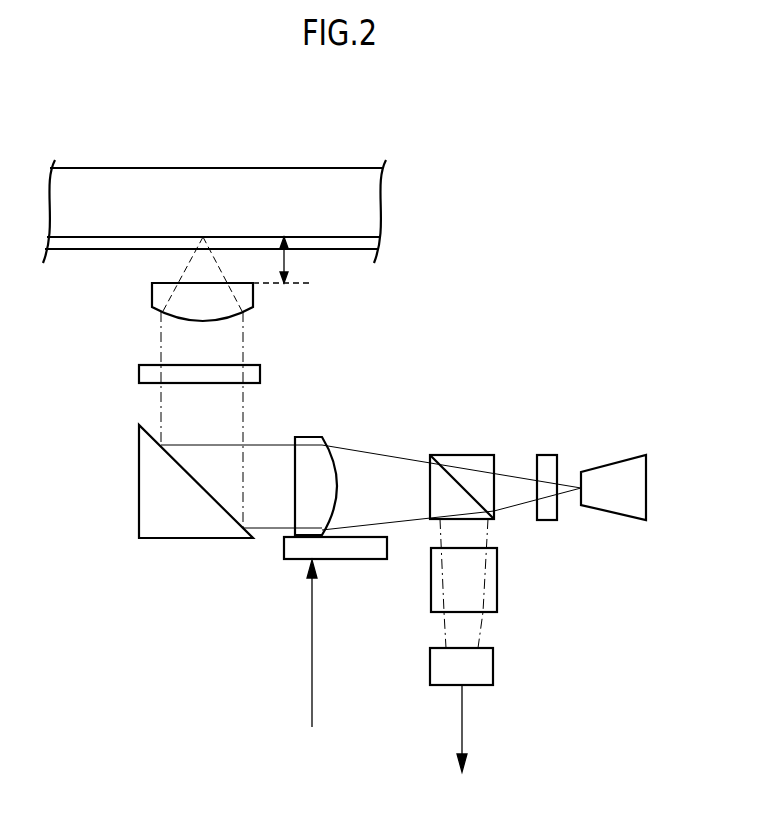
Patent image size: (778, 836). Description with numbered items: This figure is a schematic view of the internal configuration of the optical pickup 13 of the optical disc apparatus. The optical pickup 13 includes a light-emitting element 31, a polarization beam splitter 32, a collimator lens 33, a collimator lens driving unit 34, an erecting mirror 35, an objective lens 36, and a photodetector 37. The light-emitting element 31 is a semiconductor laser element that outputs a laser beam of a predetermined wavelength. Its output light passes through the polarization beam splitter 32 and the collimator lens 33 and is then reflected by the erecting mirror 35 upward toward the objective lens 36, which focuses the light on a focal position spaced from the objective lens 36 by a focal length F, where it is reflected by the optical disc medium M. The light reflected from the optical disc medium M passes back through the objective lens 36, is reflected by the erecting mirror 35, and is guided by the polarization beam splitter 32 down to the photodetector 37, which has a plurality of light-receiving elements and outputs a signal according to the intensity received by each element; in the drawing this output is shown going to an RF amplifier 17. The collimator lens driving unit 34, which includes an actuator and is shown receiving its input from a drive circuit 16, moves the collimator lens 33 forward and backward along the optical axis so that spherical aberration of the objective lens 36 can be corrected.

The optical disc medium M is at (350, 168).
The focal length F is at (288, 260).
The optical pickup 13 is at (642, 421).
The light-emitting element 31 is at (612, 515).
The polarization beam splitter 32 is at (463, 455).
The collimator lens 33 is at (310, 437).
The collimator lens driving unit 34 is at (353, 560).
The erecting mirror 35 is at (170, 540).
The objective lens 36 is at (152, 297).
The photodetector 37 is at (494, 665).
The drive circuit 16 is at (271, 663).
The RF amplifier 17 is at (529, 748).